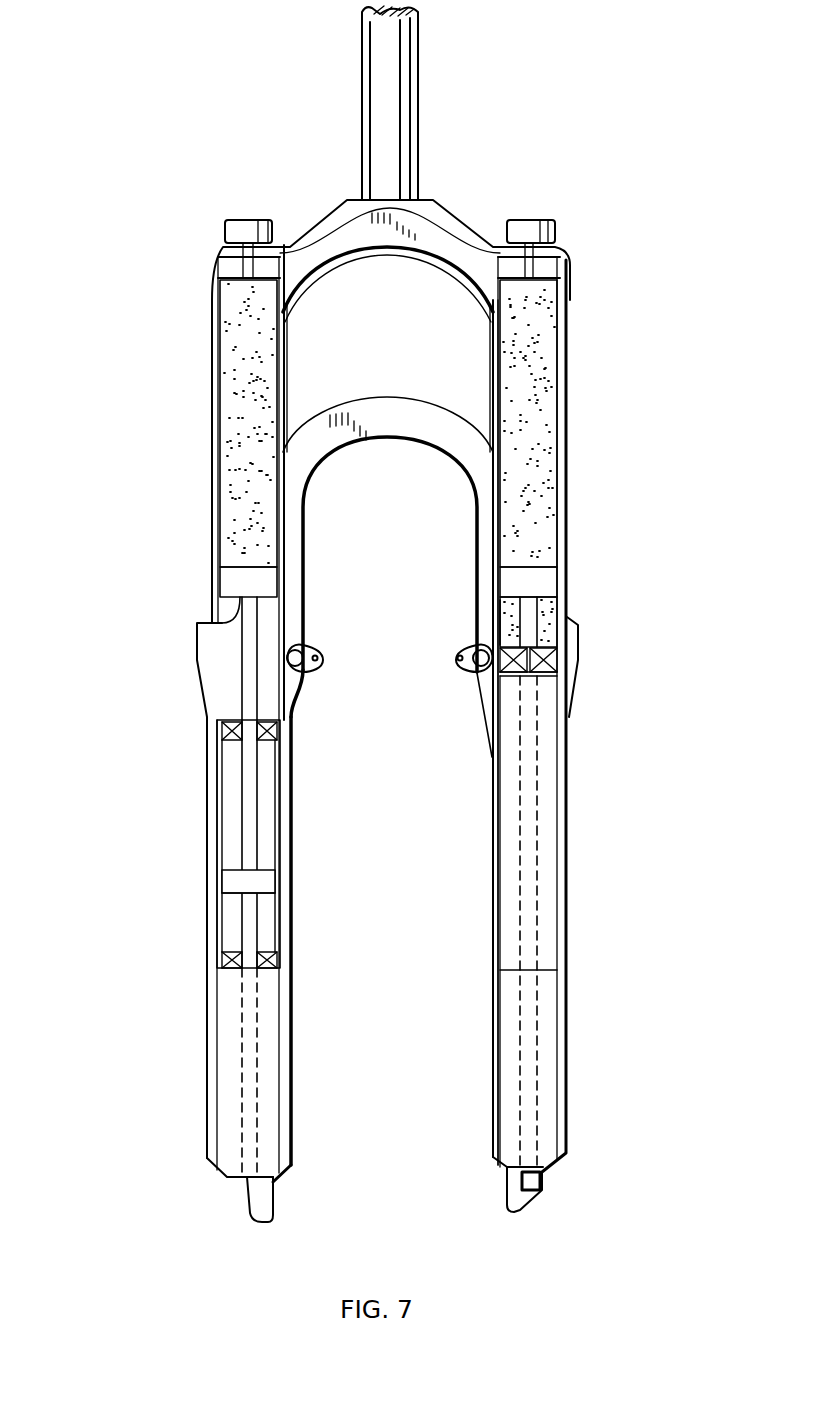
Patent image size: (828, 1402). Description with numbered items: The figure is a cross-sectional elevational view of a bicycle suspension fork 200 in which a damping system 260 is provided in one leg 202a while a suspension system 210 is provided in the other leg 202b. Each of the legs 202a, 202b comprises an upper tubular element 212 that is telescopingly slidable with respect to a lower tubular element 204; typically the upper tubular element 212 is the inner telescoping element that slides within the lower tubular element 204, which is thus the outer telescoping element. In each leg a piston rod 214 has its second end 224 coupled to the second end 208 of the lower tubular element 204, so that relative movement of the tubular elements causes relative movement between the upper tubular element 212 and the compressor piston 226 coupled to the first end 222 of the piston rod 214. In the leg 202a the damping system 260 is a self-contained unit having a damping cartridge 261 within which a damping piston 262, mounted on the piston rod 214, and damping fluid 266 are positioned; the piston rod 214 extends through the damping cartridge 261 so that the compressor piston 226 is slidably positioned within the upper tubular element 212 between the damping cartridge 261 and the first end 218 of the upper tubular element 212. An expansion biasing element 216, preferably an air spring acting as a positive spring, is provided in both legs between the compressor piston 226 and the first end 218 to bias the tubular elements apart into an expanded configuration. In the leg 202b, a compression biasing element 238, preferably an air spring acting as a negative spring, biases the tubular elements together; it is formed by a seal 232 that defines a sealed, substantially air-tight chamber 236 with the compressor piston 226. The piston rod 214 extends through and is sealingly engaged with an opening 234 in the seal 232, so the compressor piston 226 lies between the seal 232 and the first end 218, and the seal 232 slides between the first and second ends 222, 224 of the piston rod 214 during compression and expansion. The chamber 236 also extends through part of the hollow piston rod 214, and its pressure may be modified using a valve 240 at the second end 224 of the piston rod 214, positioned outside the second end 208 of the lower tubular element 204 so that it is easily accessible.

The suspension fork 200 is at (230, 127).
The leg 202a is at (195, 782).
The leg 202b is at (585, 755).
The lower tubular element 204 is at (300, 1047).
The second end of lower tubular element 208 is at (208, 1152).
The suspension system 210 is at (477, 793).
The upper tubular element 212 is at (212, 415).
The piston rod 214 is at (257, 645).
The expansion biasing element 216 is at (247, 353).
The first end of upper tubular element 218 is at (215, 318).
The first end of piston rod 222 is at (252, 618).
The second end of piston rod 224 is at (240, 1133).
The compressor piston 226 is at (250, 582).
The seal 232 is at (558, 668).
The opening in seal 234 is at (508, 687).
The chamber 236 is at (500, 620).
The compression biasing element 238 is at (530, 612).
The valve 240 is at (543, 1178).
The damping system 260 is at (185, 825).
The damping cartridge 261 is at (213, 882).
The damping piston 262 is at (230, 883).
The damping fluid 266 is at (225, 852).